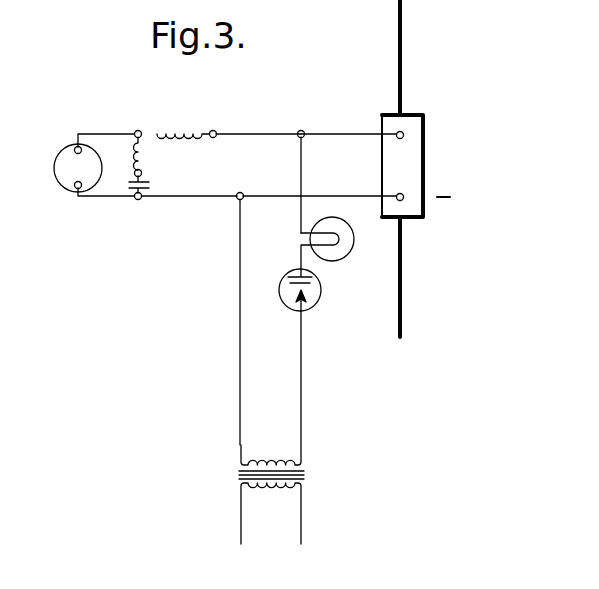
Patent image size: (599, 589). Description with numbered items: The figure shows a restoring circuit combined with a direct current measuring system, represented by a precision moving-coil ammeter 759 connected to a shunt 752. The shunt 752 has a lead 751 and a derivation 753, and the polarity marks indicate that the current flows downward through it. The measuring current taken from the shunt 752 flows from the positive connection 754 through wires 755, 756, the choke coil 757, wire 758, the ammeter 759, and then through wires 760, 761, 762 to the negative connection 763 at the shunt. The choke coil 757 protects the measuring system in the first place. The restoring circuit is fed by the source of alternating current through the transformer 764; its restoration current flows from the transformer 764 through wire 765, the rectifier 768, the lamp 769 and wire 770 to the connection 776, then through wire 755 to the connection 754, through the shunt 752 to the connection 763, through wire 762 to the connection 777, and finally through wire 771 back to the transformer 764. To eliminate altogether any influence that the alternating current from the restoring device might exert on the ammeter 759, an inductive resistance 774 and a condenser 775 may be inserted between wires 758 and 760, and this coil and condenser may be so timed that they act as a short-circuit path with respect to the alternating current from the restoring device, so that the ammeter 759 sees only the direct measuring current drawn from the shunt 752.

The lead 751 is at (403, 52).
The shunt 752 is at (424, 167).
The derivation 753 is at (407, 306).
The positive connection 754 is at (397, 131).
The wire 755 is at (341, 133).
The wire 756 is at (256, 131).
The choke coil 757 is at (178, 124).
The wire 758 is at (105, 133).
The precision ammeter 759 is at (53, 165).
The wire 760 is at (101, 203).
The wire 761 is at (189, 203).
The wire 762 is at (270, 193).
The negative connection 763 is at (405, 199).
The transformer 764 is at (312, 485).
The wire 765 is at (305, 452).
The rectifier 768 is at (322, 296).
The lamp 769 is at (350, 255).
The wire 770 is at (305, 165).
The wire 771 is at (240, 290).
The inductive resistance 774 is at (147, 157).
The condenser 775 is at (147, 188).
The connection 776 is at (300, 130).
The connection 777 is at (238, 200).